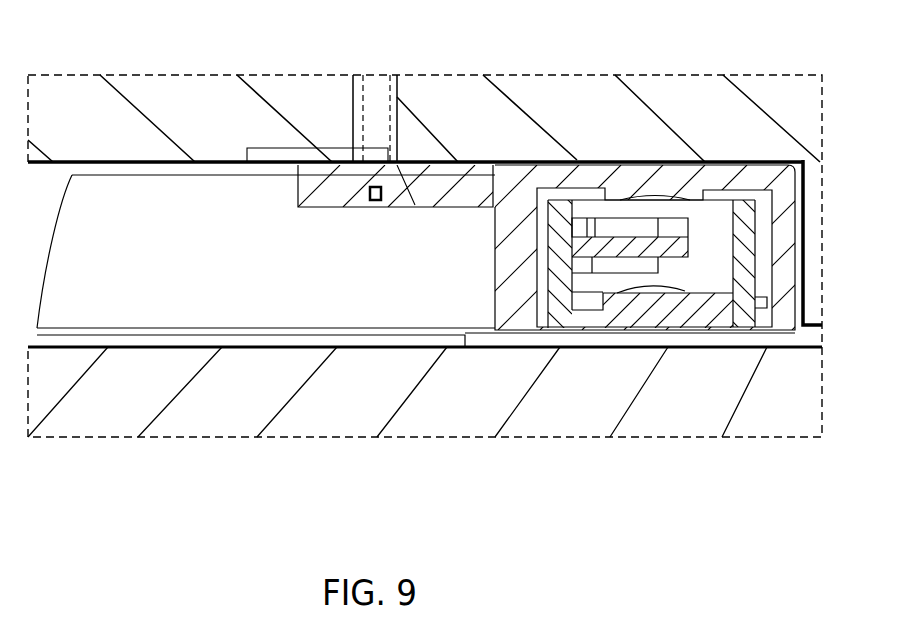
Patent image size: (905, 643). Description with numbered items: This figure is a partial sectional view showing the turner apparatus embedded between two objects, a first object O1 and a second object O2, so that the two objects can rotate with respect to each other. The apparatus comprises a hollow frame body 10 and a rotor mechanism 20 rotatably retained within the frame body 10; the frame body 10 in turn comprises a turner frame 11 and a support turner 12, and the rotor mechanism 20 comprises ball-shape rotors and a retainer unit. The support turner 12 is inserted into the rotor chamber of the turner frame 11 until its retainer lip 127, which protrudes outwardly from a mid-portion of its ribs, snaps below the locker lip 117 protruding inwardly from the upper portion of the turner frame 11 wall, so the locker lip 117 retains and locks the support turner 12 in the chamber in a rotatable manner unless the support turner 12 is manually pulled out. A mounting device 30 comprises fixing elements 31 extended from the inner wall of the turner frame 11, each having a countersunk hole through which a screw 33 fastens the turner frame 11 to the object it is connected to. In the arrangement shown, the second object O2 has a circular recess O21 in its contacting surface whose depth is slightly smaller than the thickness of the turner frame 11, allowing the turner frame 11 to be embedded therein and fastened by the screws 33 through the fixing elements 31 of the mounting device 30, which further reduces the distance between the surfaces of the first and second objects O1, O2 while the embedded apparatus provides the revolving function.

The frame body 10 is at (92, 282).
The turner frame 11 is at (698, 173).
The support turner 12 is at (592, 325).
The rotor mechanism 20 is at (648, 226).
The mounting device 30 is at (373, 227).
The fixing element 31 is at (313, 175).
The screw 33 is at (362, 110).
The locker lip 117 is at (760, 300).
The retainer lip 127 is at (760, 267).
The first object O1 is at (490, 390).
The second object O2 is at (480, 112).
The circular recess O21 is at (801, 228).